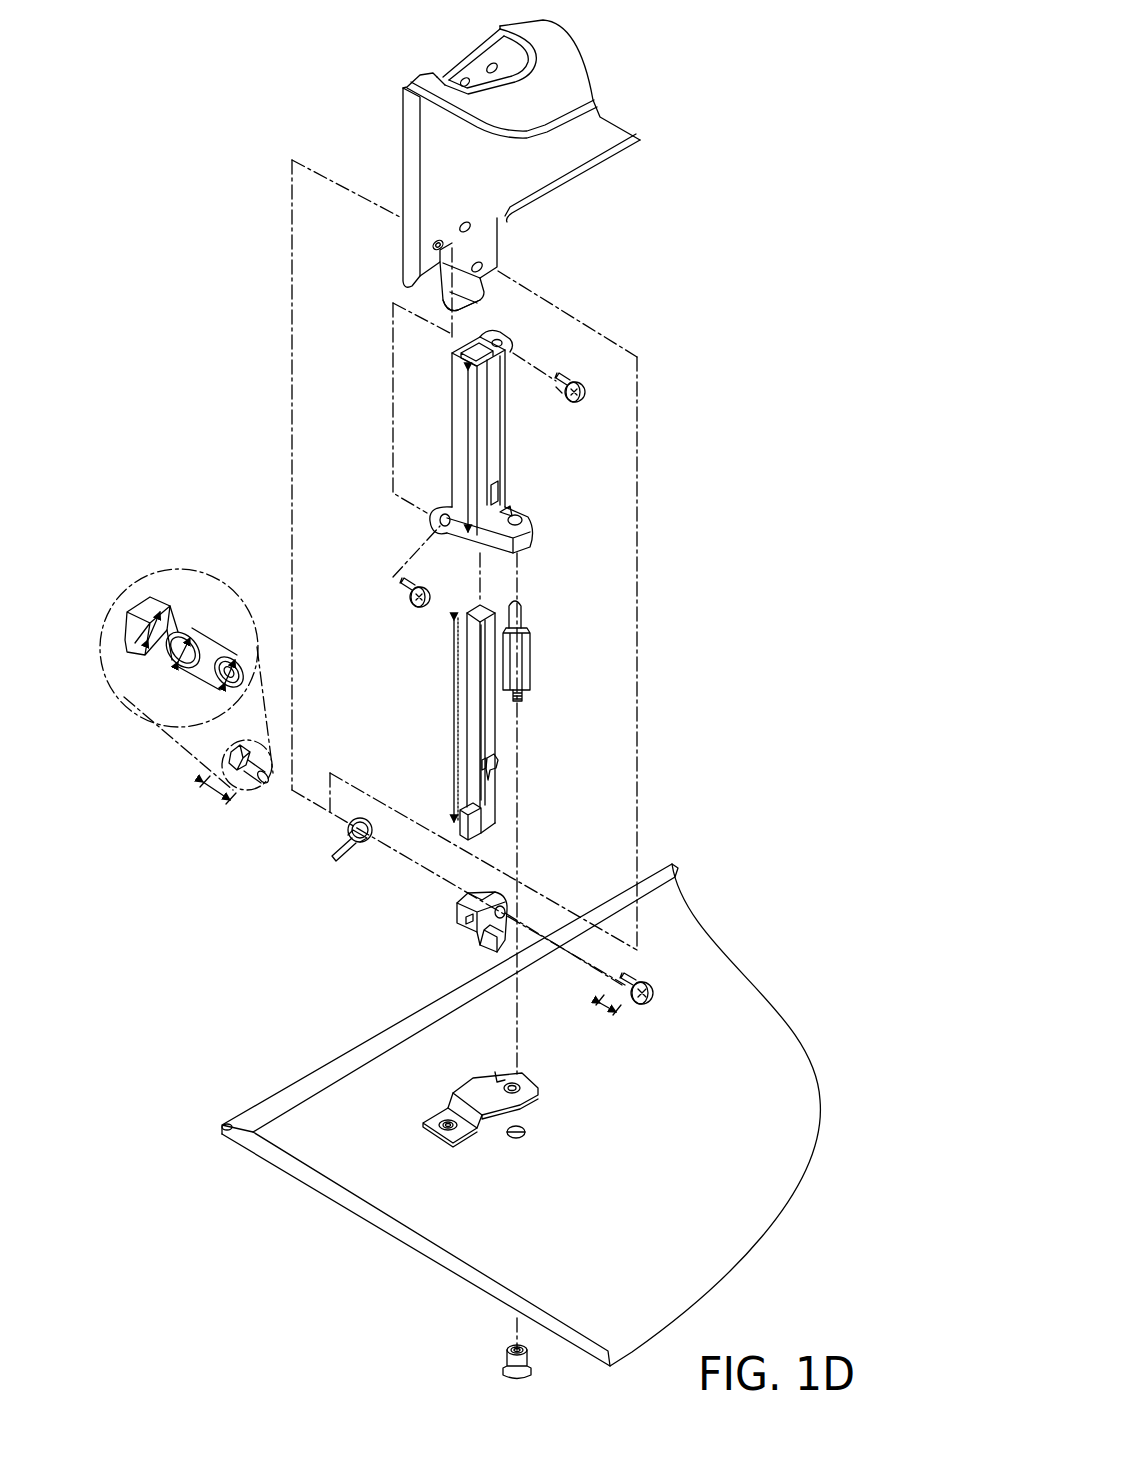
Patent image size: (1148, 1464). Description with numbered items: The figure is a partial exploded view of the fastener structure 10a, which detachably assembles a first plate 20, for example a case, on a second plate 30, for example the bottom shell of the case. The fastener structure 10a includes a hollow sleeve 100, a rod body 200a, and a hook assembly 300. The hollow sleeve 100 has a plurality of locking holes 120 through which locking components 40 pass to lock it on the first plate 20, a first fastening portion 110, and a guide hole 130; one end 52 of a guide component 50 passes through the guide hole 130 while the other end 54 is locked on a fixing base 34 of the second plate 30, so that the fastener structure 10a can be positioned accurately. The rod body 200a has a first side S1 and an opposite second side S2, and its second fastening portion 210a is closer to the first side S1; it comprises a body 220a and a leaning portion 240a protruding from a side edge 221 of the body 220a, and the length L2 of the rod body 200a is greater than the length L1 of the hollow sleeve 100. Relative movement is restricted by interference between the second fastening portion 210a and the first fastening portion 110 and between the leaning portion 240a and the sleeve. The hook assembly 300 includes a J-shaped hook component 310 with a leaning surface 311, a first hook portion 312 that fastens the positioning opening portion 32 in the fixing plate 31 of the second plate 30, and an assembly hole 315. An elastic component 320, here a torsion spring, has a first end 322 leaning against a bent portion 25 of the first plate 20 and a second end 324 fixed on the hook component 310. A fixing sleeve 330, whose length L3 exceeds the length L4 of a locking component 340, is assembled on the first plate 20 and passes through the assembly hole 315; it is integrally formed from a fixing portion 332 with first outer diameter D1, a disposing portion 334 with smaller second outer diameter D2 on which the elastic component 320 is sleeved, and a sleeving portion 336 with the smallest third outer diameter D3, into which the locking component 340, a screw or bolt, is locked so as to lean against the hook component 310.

The fastener structure 10a is at (858, 28).
The first plate 20 is at (428, 76).
The bent portion 25 is at (478, 300).
The second plate 30 is at (521, 1121).
The fixing plate 31 is at (468, 1087).
The positioning opening portion 32 is at (506, 1076).
The fixing base 34 is at (506, 1360).
The locking component 40 is at (586, 392).
The guide component 50 is at (540, 652).
The one end 52 is at (523, 612).
The other end 54 is at (522, 698).
The hollow sleeve 100 is at (474, 445).
The first fastening portion 110 is at (500, 494).
The locking holes 120 is at (504, 344).
The guide hole 130 is at (516, 513).
The rod body 200a is at (471, 737).
The second fastening portion 210a is at (498, 762).
The body 220a is at (490, 730).
The side edge 221 is at (479, 764).
The leaning portion 240a is at (454, 832).
The hook assembly 300 is at (416, 764).
The hook component 310 is at (453, 912).
The leaning surface 311 is at (481, 895).
The first hook portion 312 is at (487, 948).
The assembly hole 315 is at (506, 911).
The elastic component 320 is at (343, 869).
The first end 322 is at (334, 860).
The second end 324 is at (340, 840).
The fixing sleeve 330 is at (186, 654).
The fixing portion 332 is at (150, 600).
The disposing portion 334 is at (185, 630).
The sleeving portion 336 is at (215, 650).
The locking component 340 is at (658, 1005).
The length of the hollow sleeve L1 is at (466, 450).
The length of the rod body L2 is at (452, 720).
The length of the fixing sleeve L3 is at (215, 797).
The length of the locking component L4 is at (603, 1013).
The first side S1 is at (492, 823).
The second side S2 is at (476, 607).
The first outer diameter D1 is at (148, 645).
The second outer diameter D2 is at (180, 665).
The third outer diameter D3 is at (226, 683).